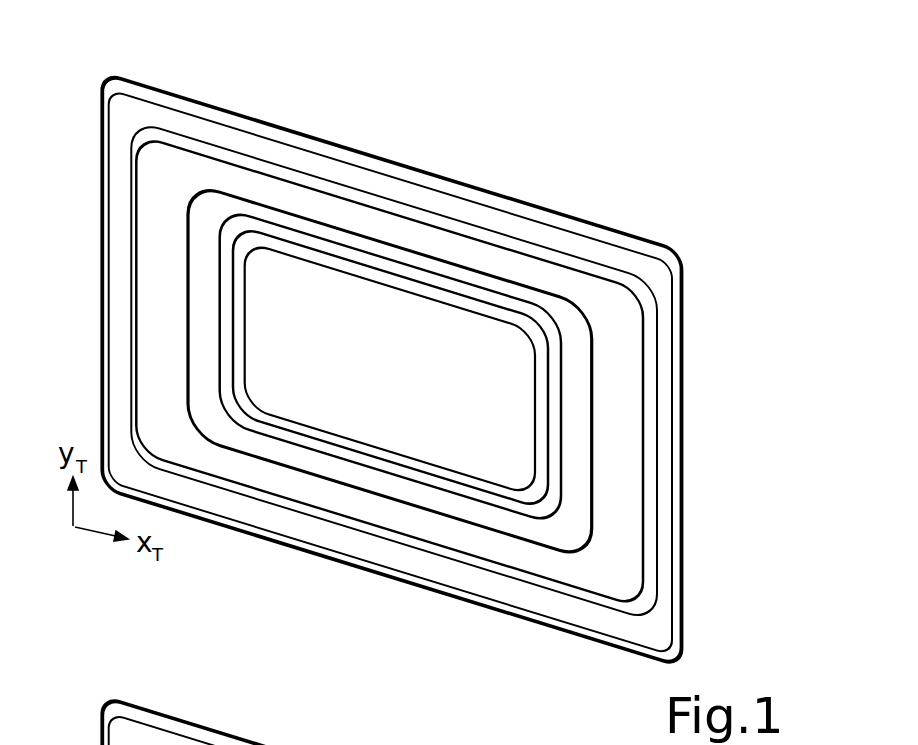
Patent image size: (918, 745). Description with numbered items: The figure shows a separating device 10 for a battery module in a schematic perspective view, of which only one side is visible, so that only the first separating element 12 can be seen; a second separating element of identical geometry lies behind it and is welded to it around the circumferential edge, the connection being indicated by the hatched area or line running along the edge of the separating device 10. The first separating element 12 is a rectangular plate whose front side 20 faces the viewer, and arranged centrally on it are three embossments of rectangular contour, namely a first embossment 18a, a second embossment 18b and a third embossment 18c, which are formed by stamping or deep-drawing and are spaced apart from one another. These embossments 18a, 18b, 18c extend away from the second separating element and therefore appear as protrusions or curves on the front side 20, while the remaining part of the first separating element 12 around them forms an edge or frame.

The separating device 10 is at (697, 229).
The first separating element 12 is at (650, 376).
The front side 20 is at (115, 287).
The first embossment 18a is at (195, 173).
The second embossment 18b is at (357, 262).
The third embossment 18c is at (458, 338).